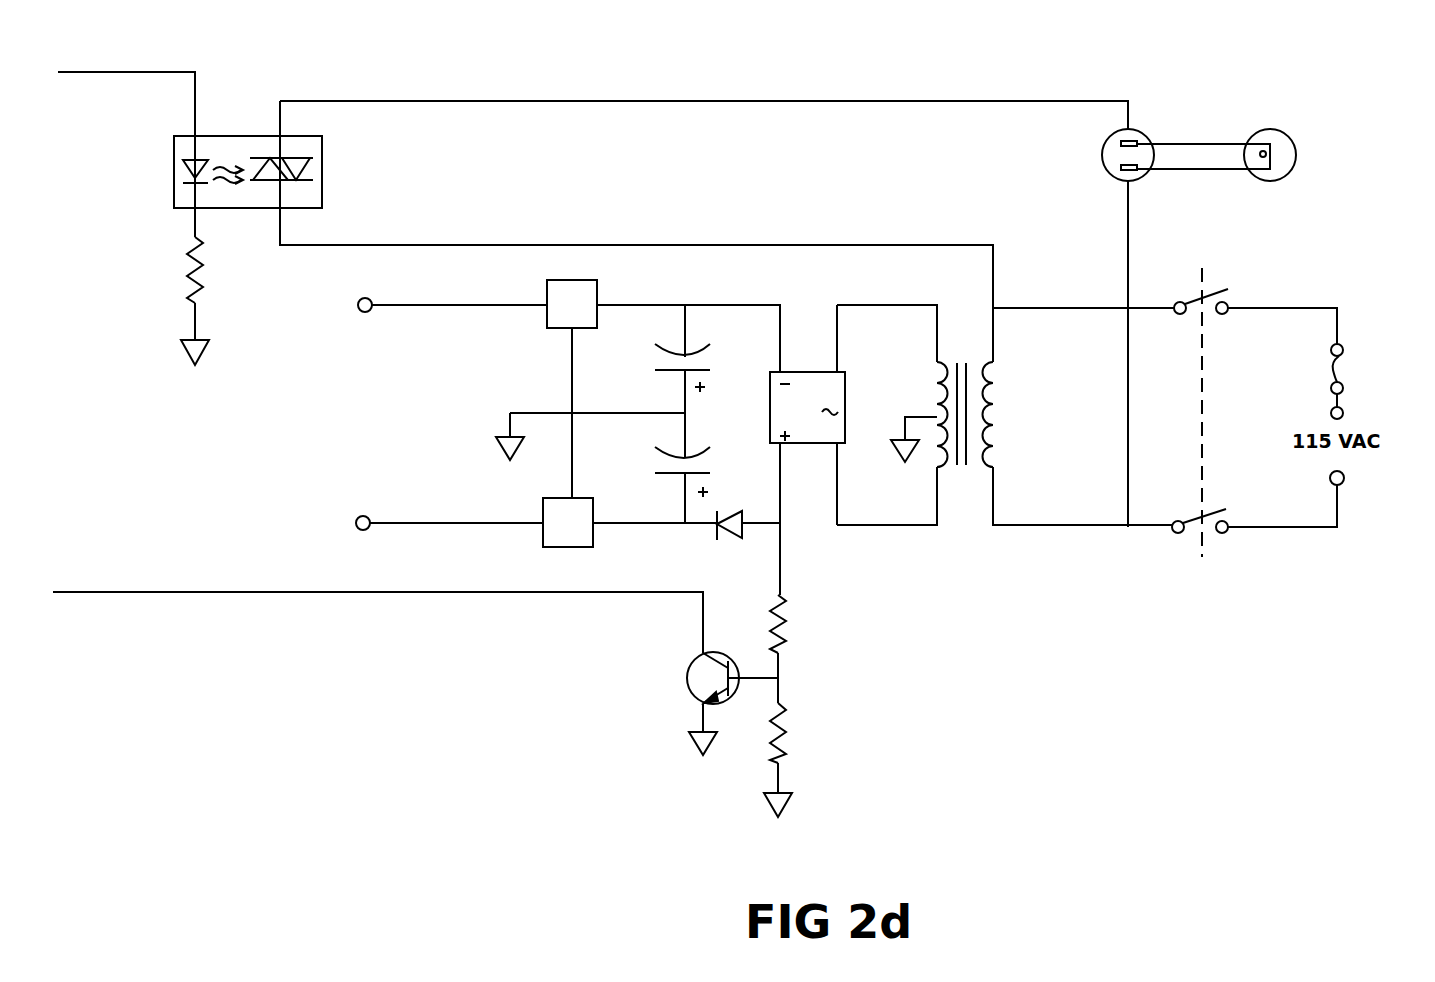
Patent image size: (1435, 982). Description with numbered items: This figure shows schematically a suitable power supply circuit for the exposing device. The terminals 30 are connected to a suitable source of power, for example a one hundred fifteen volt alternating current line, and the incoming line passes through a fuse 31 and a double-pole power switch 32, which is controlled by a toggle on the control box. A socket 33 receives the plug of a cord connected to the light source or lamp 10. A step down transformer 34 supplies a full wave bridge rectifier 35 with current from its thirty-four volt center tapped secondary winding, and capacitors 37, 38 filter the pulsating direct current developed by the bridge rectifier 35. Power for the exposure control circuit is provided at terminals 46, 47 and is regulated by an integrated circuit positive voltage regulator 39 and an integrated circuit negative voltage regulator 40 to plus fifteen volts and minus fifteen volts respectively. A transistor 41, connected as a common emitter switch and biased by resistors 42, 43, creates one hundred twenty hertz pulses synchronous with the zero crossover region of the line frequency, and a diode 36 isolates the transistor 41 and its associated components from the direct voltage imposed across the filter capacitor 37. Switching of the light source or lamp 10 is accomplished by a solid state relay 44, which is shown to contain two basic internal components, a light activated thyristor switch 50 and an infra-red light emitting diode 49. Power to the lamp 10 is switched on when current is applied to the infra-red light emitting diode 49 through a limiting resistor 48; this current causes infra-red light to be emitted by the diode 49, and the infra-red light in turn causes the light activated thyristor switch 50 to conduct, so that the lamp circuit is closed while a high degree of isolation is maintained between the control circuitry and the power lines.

The light source or lamp 10 is at (1270, 143).
The terminals 30 is at (1344, 414).
The fuse 31 is at (1346, 356).
The double-pole power switch 32 is at (1228, 305).
The socket 33 is at (1102, 157).
The step down transformer 34 is at (995, 397).
The full wave bridge rectifier 35 is at (770, 407).
The diode 36 is at (717, 538).
The filter capacitor 37 is at (655, 452).
The filter capacitor 38 is at (655, 349).
The integrated circuit positive voltage regulator 39 is at (543, 537).
The integrated circuit negative voltage regulator 40 is at (547, 327).
The transistor 41 is at (687, 680).
The resistor 42 is at (782, 632).
The resistor 43 is at (782, 737).
The solid state relay 44 is at (332, 180).
The terminal 46 is at (357, 516).
The terminal 47 is at (360, 313).
The limiting resistor 48 is at (199, 285).
The infra-red light emitting diode 49 is at (181, 170).
The light activated thyristor switch 50 is at (313, 158).